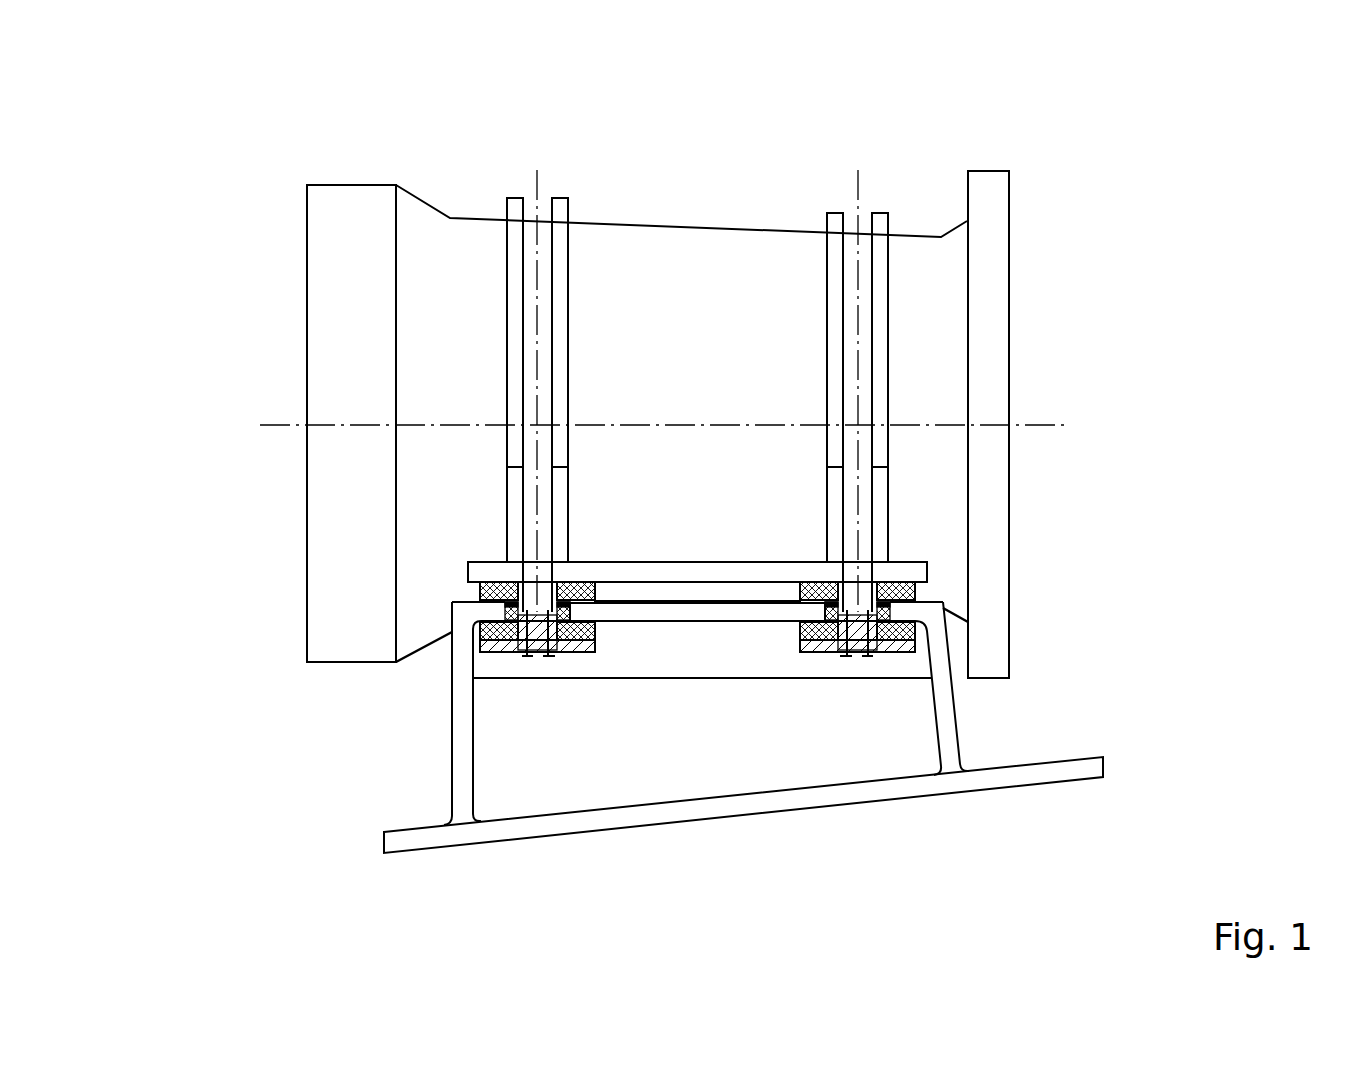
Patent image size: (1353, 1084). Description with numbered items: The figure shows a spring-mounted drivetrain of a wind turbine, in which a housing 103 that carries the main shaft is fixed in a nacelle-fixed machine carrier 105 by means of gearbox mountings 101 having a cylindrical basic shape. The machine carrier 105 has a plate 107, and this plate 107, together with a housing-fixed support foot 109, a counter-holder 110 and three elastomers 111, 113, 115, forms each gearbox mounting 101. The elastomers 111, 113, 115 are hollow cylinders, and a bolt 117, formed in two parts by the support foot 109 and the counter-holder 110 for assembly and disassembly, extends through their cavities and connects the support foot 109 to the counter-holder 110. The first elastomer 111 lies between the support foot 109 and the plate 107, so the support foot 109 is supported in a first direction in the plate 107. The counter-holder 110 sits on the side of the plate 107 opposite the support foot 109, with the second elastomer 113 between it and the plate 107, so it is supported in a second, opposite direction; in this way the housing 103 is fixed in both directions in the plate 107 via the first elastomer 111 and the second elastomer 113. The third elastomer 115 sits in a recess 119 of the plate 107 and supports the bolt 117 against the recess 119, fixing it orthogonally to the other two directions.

The gearbox mounting 101 is at (587, 527).
The housing 103 is at (447, 263).
The machine carrier 105 is at (535, 827).
The plate 107 is at (703, 608).
The support foot 109 is at (485, 570).
The counter-holder 110 is at (520, 648).
The first elastomer 111 is at (480, 590).
The second elastomer 113 is at (517, 641).
The third elastomer 115 is at (505, 612).
The bolt 117 is at (530, 592).
The recess 119 is at (570, 607).